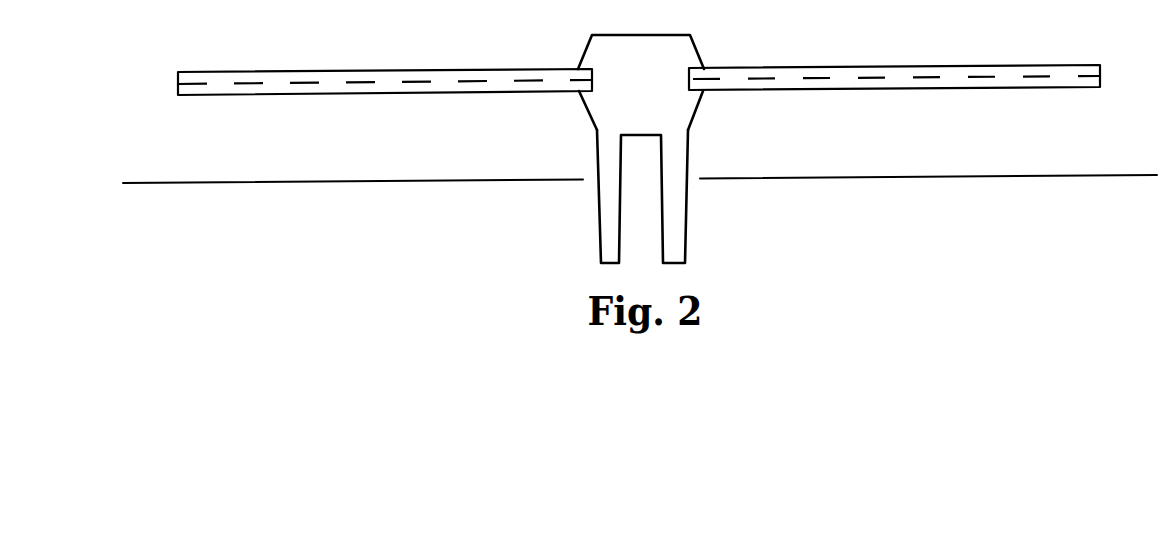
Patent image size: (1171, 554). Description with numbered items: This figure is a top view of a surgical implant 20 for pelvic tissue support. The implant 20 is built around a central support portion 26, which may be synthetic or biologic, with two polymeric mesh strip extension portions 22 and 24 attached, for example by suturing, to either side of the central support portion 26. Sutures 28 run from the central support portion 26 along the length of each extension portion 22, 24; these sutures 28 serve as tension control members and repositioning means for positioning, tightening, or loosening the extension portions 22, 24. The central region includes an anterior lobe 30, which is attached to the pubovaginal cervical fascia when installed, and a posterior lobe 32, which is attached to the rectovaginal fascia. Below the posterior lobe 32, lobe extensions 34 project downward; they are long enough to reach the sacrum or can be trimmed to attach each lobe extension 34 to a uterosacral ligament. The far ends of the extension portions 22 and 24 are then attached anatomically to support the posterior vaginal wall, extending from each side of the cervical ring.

The implant 20 is at (644, 141).
The extension portion 22 is at (983, 88).
The extension portion 24 is at (405, 95).
The central support portion 26 is at (658, 116).
The sutures 28 is at (420, 82).
The anterior lobe 30 is at (705, 52).
The posterior lobe 32 is at (699, 115).
The lobe extensions 34 is at (607, 152).